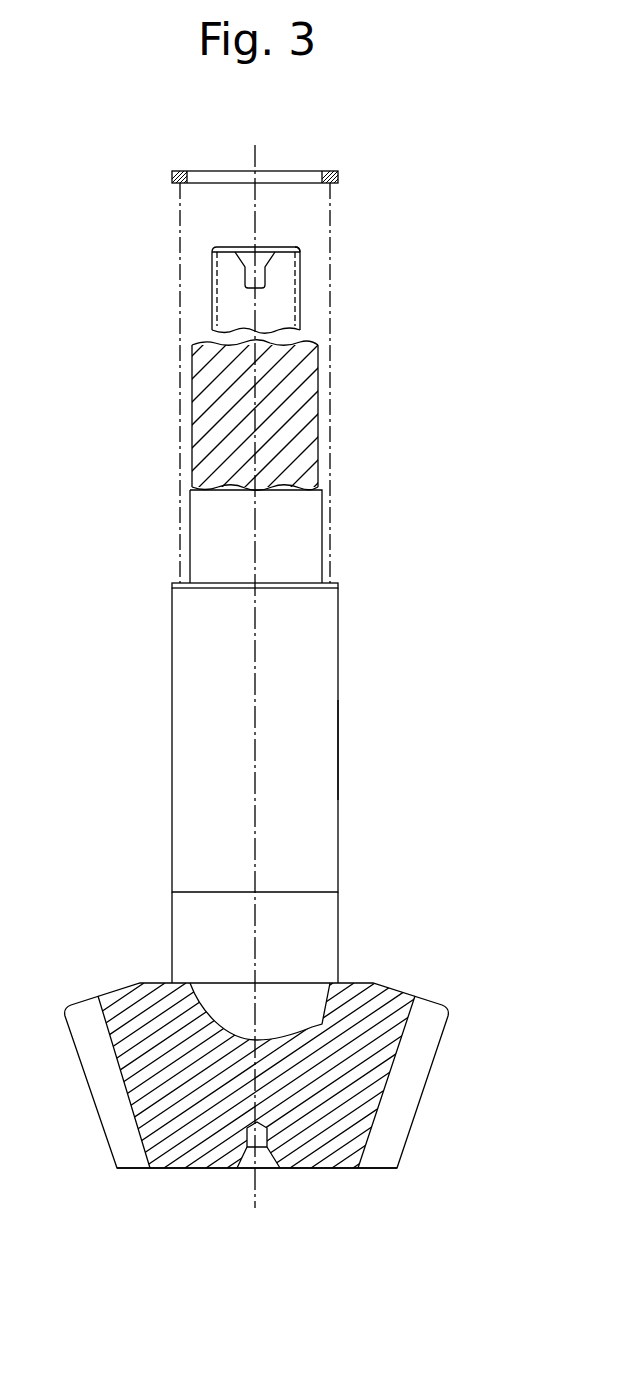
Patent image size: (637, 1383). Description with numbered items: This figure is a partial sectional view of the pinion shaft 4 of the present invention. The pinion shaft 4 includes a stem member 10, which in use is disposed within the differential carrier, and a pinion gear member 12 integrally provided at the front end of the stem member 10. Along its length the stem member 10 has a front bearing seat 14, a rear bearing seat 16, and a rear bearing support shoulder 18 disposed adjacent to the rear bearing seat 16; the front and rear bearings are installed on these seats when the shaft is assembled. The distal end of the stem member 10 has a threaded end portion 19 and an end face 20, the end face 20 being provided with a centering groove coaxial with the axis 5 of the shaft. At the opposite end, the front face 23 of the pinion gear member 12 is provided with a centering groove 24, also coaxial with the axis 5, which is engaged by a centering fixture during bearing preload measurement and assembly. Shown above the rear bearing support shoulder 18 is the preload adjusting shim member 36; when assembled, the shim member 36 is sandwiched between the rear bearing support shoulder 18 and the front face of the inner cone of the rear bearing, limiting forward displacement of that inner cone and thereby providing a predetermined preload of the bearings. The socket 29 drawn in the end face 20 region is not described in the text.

The pinion shaft 4 is at (339, 748).
The axis 5 is at (257, 160).
The stem member 10 is at (318, 642).
The pinion gear member 12 is at (410, 1090).
The front bearing seat 14 is at (318, 931).
The rear bearing seat 16 is at (308, 527).
The rear bearing support shoulder 18 is at (323, 581).
The threaded end portion 19 is at (287, 293).
The end face 20 is at (282, 246).
The front face 23 is at (320, 1168).
The centering groove 24 is at (245, 1162).
The screw socket 29 is at (244, 250).
The preload adjusting shim member 36 is at (338, 178).